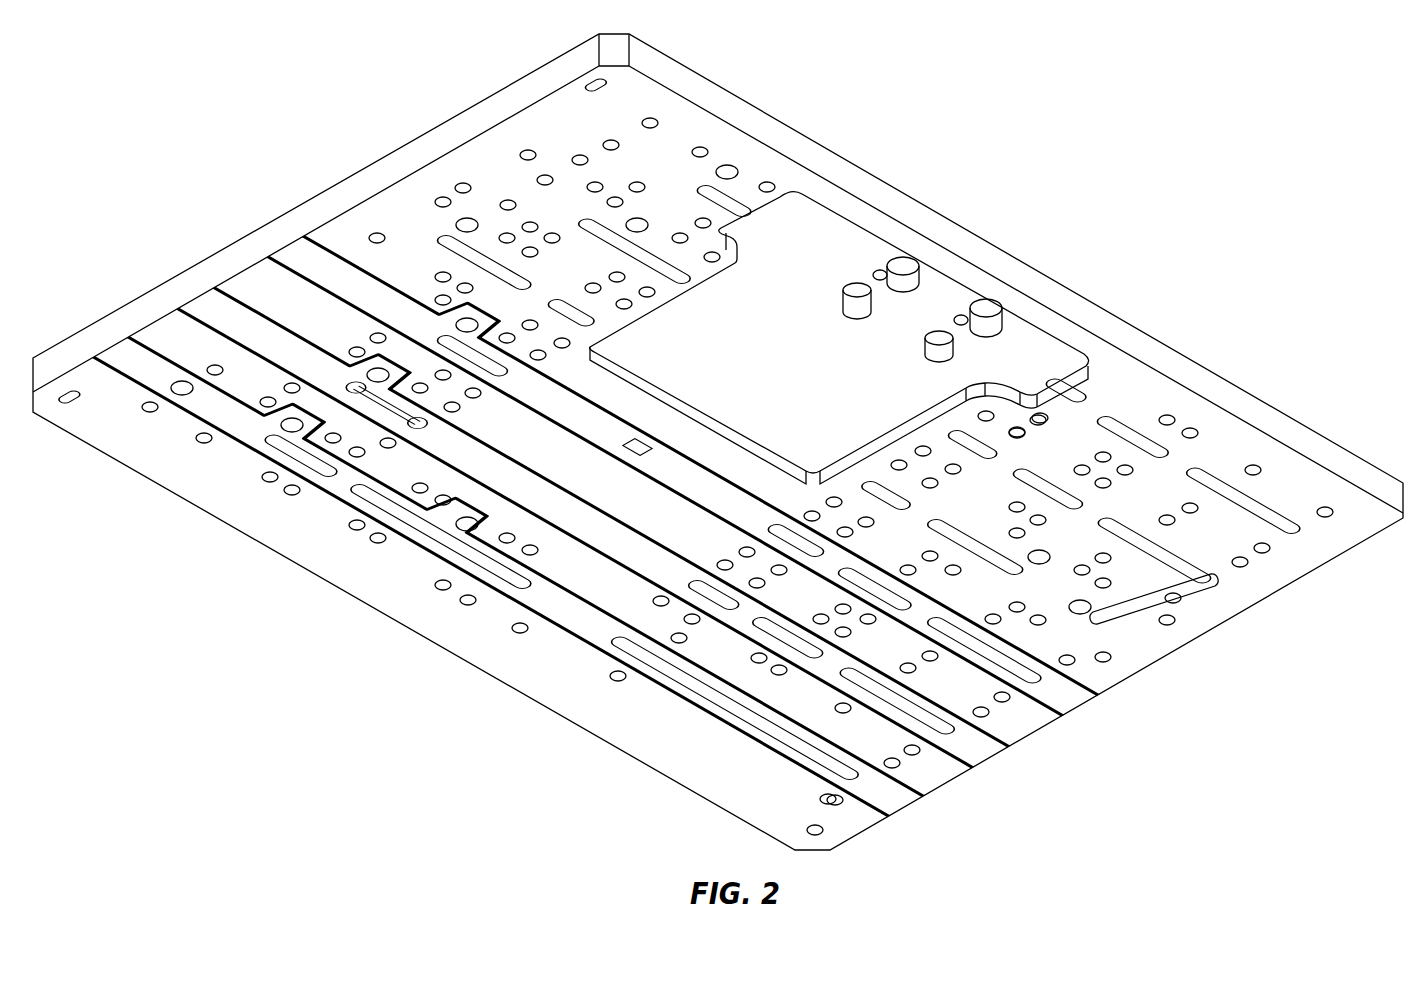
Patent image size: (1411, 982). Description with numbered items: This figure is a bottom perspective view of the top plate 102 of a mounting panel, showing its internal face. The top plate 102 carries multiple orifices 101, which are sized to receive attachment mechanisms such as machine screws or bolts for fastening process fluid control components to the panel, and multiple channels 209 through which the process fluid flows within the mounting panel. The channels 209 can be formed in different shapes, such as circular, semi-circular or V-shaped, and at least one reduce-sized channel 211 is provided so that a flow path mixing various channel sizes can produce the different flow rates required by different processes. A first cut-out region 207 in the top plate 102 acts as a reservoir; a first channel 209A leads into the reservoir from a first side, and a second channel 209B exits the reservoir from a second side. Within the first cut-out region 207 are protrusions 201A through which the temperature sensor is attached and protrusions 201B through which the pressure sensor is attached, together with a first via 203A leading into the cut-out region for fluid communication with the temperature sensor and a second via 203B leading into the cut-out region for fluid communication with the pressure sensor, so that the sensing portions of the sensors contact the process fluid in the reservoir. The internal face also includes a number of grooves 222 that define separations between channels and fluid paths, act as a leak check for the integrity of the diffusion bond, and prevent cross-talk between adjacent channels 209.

The orifices 101 is at (522, 284).
The top plate 102 is at (696, 64).
The protrusions 201A is at (955, 358).
The protrusions 201B is at (858, 290).
The first via 203A is at (960, 318).
The second via 203B is at (900, 298).
The first cut-out region 207 is at (802, 371).
The channels 209 is at (420, 333).
The first channel 209A is at (1097, 399).
The second channel 209B is at (742, 186).
The reduce-sized channel 211 is at (372, 392).
The grooves 222 is at (603, 417).